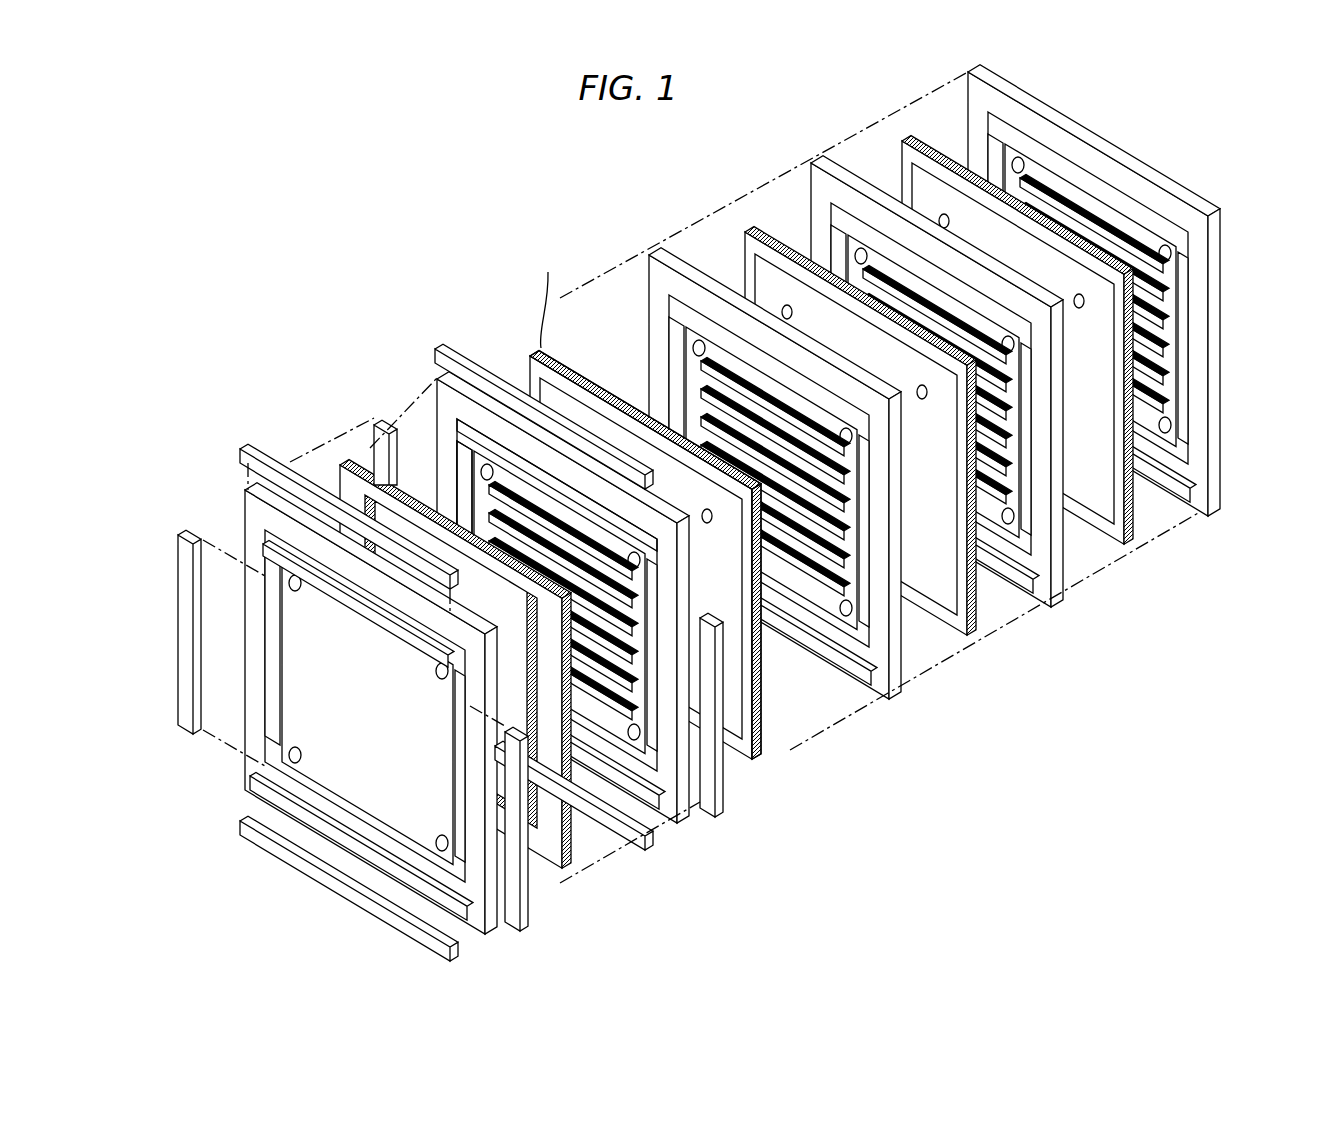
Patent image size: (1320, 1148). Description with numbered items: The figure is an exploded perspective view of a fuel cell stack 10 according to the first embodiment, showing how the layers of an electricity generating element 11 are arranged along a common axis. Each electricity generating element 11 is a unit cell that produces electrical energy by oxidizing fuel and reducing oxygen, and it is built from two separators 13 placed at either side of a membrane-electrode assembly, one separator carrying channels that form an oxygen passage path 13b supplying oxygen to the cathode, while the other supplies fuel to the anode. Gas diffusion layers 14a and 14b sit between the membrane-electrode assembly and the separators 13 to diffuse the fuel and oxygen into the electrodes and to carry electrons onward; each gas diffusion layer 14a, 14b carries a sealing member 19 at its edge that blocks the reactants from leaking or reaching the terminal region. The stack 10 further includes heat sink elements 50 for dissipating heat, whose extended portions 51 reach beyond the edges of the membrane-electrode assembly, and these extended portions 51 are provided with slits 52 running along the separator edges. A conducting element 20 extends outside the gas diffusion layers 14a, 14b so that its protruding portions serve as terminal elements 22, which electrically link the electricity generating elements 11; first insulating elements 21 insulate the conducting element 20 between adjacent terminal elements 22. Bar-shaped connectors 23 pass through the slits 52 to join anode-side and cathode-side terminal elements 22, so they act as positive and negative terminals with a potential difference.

The fuel cell stack 10 is at (699, 513).
The electricity generating element 11 is at (1061, 396).
The separator 13 is at (910, 665).
The oxygen passage path 13b is at (639, 597).
The gas diffusion layer 14a is at (969, 622).
The gas diffusion layer 14b is at (965, 605).
The sealing member 19 is at (637, 590).
The conducting element 20 is at (645, 487).
The first insulating element 21 is at (630, 425).
The terminal element 22 is at (641, 428).
The connector 23 is at (443, 340).
The heat sink element 50 is at (476, 382).
The extended portion 51 is at (447, 402).
The slit 52 is at (486, 440).